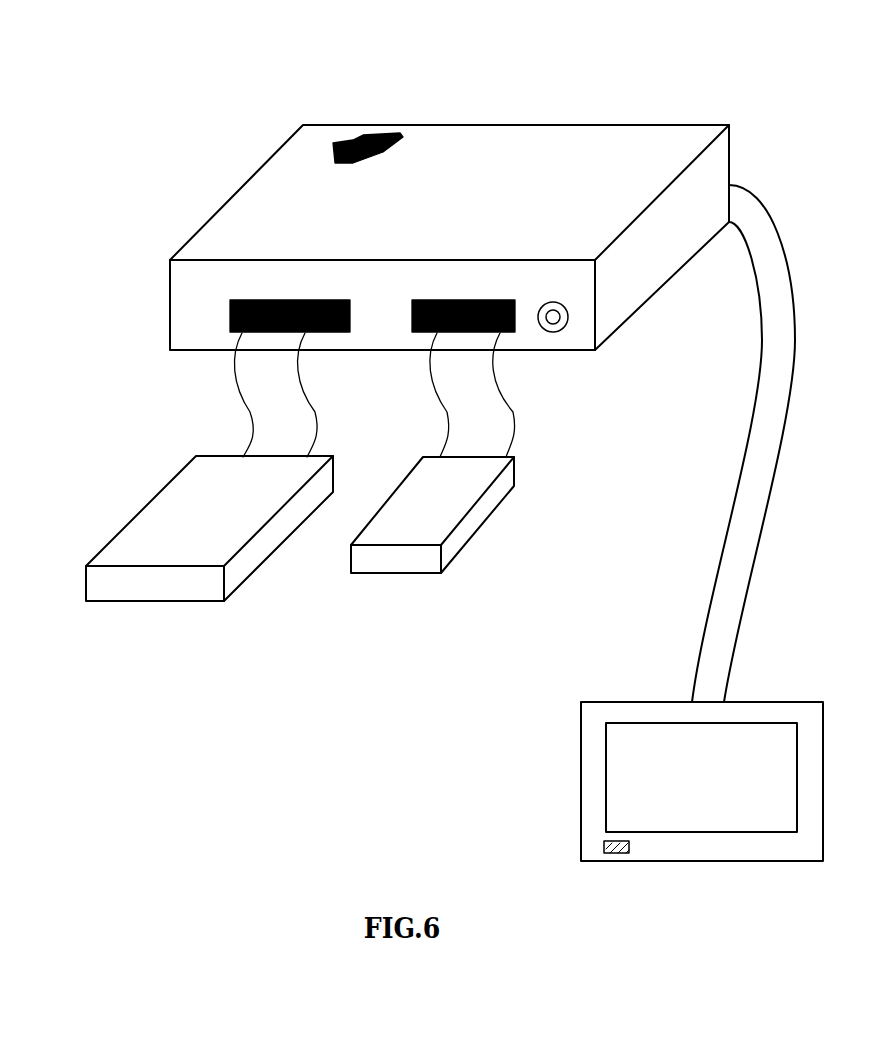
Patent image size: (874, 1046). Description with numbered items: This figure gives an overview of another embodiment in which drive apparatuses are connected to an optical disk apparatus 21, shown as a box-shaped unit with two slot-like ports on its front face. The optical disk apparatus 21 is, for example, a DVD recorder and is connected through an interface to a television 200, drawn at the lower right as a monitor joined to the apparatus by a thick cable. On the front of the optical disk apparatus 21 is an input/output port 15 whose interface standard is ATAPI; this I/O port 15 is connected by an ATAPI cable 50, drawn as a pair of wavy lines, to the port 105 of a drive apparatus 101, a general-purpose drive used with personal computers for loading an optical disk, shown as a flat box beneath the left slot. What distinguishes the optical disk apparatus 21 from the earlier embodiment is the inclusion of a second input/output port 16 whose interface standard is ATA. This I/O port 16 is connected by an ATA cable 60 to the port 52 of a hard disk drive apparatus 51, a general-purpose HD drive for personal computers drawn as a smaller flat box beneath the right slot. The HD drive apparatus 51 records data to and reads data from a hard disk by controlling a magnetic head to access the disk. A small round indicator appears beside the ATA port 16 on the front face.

The optical disk apparatus 21 is at (467, 124).
The input/output port 15 is at (292, 300).
The input/output port 16 is at (462, 300).
The ATAPI cable 50 is at (242, 400).
The ATA cable 60 is at (513, 420).
The drive apparatus 101 is at (152, 496).
The port 105 is at (273, 457).
The hard disk drive apparatus 51 is at (472, 525).
The port 52 is at (472, 458).
The television 200 is at (581, 738).